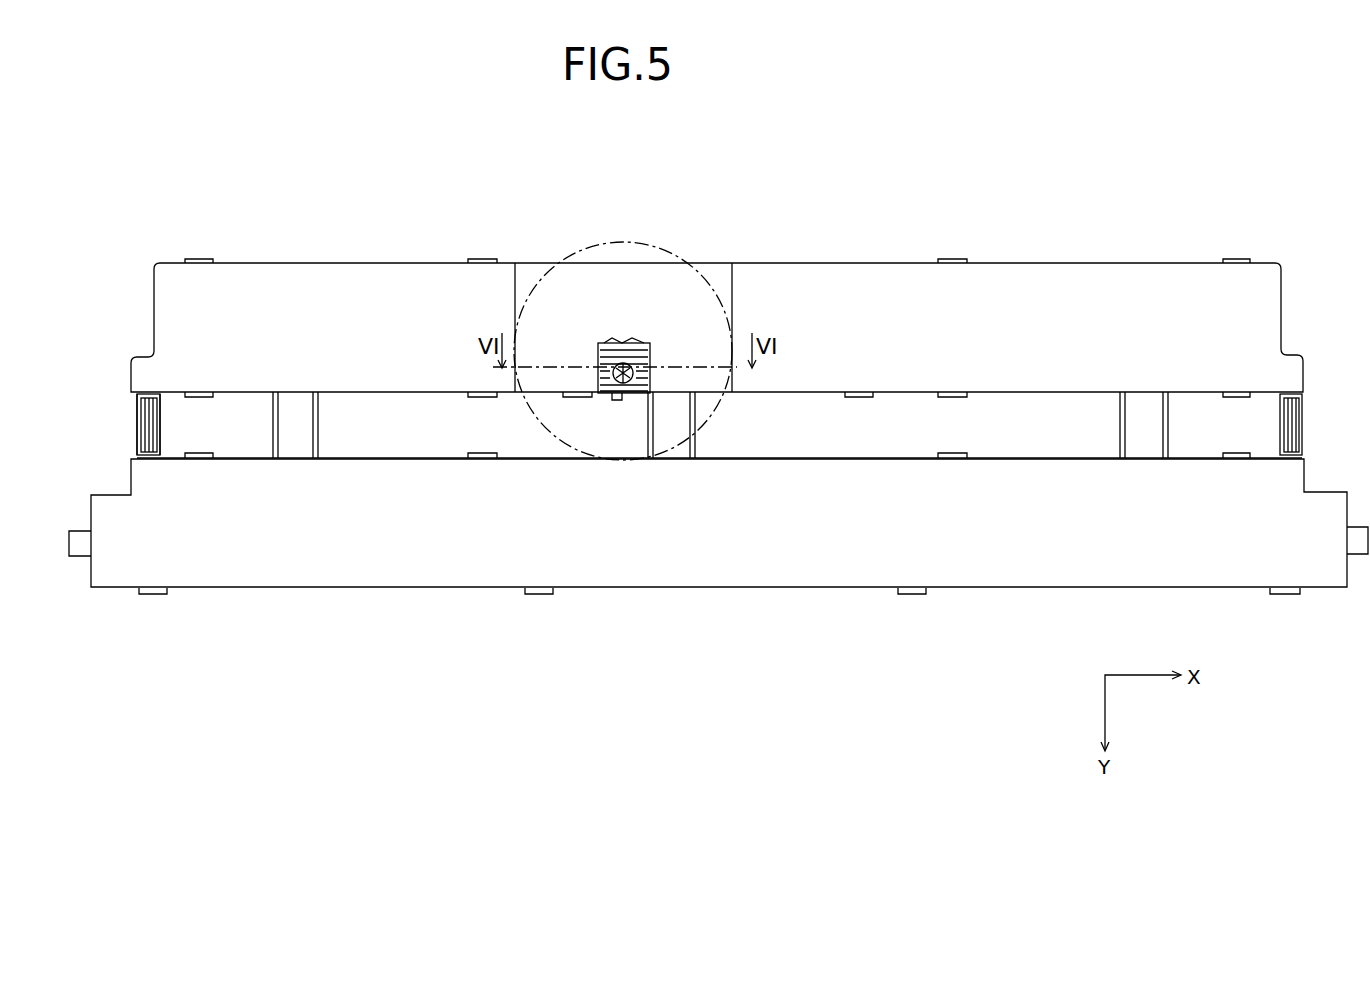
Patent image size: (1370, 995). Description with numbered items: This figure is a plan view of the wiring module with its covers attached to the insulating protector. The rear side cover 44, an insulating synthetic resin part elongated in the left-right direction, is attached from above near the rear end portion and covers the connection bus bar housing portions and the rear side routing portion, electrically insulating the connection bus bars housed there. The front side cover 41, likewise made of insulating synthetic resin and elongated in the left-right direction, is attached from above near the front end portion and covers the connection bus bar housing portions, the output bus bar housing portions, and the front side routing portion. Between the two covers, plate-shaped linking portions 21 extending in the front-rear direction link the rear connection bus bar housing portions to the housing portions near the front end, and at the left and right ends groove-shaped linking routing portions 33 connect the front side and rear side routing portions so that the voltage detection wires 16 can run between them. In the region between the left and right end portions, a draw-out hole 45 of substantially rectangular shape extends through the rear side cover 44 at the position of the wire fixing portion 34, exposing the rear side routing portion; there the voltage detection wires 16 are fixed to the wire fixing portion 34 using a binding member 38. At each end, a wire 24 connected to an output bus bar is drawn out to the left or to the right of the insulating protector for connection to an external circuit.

The voltage detection wire 16 is at (143, 420).
The linking portion 21 is at (275, 423).
The wire 24 is at (78, 540).
The linking routing portion 33 is at (136, 445).
The wire fixing portion 34 is at (607, 390).
The binding member 38 is at (620, 390).
The front side cover 41 is at (265, 548).
The rear side cover 44 is at (247, 287).
The draw-out hole 45 is at (617, 346).